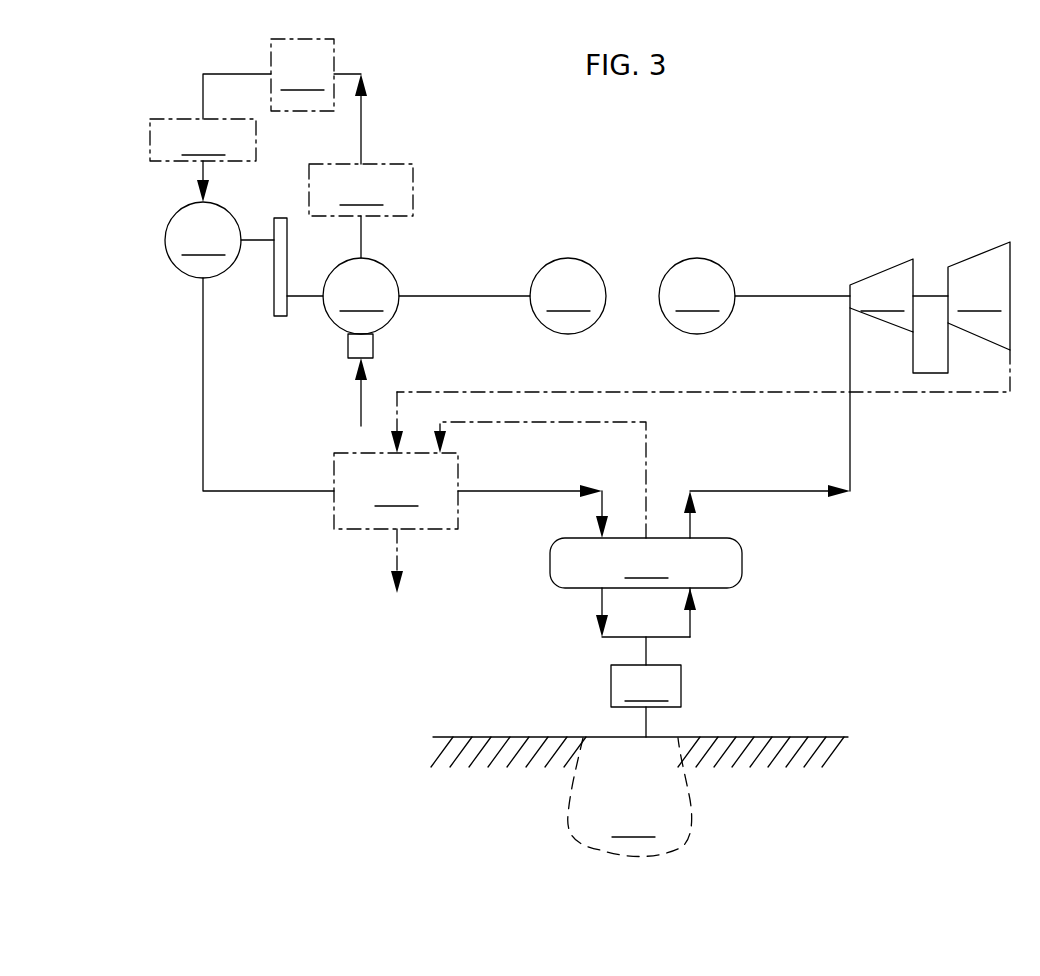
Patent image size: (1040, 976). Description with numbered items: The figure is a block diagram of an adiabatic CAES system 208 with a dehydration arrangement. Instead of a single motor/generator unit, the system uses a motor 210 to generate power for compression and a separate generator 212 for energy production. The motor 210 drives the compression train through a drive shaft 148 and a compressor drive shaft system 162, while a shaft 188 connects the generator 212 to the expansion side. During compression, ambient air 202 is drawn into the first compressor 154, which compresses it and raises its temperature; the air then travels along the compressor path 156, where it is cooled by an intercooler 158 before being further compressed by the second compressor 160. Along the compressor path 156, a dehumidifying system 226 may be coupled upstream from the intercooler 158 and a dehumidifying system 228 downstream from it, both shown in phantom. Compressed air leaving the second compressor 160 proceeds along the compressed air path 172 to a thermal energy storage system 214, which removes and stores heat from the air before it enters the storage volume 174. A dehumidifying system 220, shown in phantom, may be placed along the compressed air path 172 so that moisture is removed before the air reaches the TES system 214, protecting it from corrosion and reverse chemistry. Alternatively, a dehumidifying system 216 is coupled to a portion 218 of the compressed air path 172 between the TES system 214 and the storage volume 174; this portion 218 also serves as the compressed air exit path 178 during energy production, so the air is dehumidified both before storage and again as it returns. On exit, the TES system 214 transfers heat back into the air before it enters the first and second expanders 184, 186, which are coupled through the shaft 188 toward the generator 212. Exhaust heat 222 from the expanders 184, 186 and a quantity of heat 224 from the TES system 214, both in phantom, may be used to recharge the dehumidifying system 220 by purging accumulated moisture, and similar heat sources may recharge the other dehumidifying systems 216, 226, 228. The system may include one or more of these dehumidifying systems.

The drive shaft 148 is at (475, 296).
The first compressor 154 is at (361, 308).
The compressor path 156 is at (203, 95).
The intercooler 158 is at (302, 75).
The second compressor 160 is at (203, 240).
The compressor drive shaft system 162 is at (250, 298).
The compressed air path 172 is at (277, 491).
The storage volume 174 is at (639, 797).
The compressed air exit path 178 is at (850, 452).
The first expander 184 is at (899, 316).
The second expander 186 is at (979, 296).
The turbine shaft 188 is at (768, 296).
The ambient air 202 is at (335, 397).
The adiabatic CAES system 208 is at (782, 142).
The motor 210 is at (568, 296).
The generator 212 is at (697, 296).
The thermal energy storage (TES) system 214 is at (646, 563).
The dehumidifying system 216 is at (646, 687).
The portion of compressed air path 218 is at (602, 651).
The dehumidifying system 220 is at (396, 523).
The exhaust heat 222 is at (880, 393).
The quantity of heat 224 is at (646, 442).
The dehumidifying system 226 is at (361, 190).
The dehumidifying system 228 is at (203, 140).